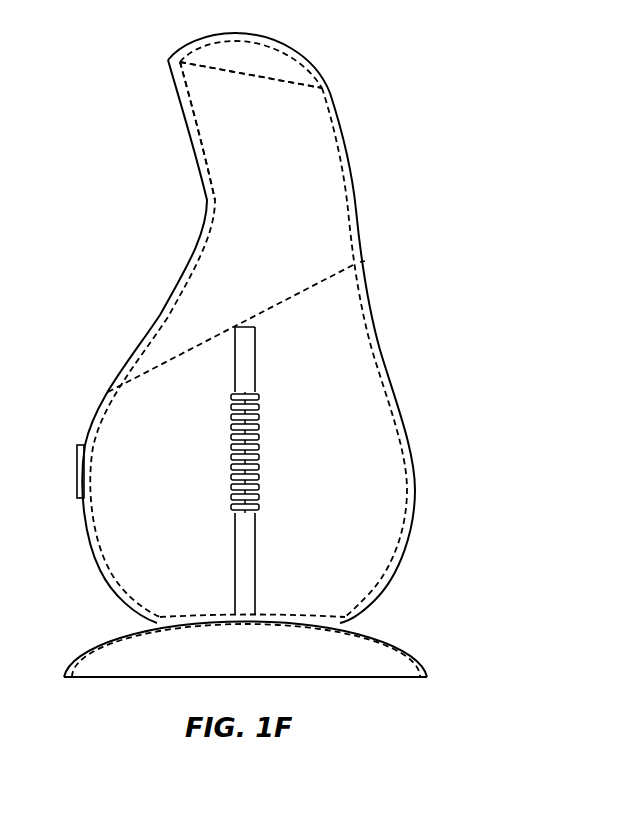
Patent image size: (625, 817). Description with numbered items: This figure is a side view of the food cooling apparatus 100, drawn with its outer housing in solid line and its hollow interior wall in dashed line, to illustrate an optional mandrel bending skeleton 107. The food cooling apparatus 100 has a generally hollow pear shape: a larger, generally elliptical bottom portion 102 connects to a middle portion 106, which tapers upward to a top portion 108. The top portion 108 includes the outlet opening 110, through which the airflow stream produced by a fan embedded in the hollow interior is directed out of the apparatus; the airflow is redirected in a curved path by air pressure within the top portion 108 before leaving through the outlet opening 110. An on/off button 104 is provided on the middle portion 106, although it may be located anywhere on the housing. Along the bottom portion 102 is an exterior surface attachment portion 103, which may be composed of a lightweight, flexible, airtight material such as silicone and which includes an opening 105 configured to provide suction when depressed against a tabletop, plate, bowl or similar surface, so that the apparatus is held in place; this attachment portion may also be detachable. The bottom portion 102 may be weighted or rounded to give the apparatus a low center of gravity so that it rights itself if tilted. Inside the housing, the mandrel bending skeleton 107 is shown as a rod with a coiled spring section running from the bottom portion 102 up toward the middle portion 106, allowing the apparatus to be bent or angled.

The food cooling apparatus 100 is at (112, 52).
The bottom portion 102 is at (410, 537).
The exterior surface attachment portion 103 is at (88, 645).
The on/off button 104 is at (76, 468).
The opening 105 is at (367, 650).
The middle portion 106 is at (393, 387).
The mandrel bending skeleton 107 is at (260, 458).
The top portion 108 is at (315, 62).
The outlet opening 110 is at (253, 183).